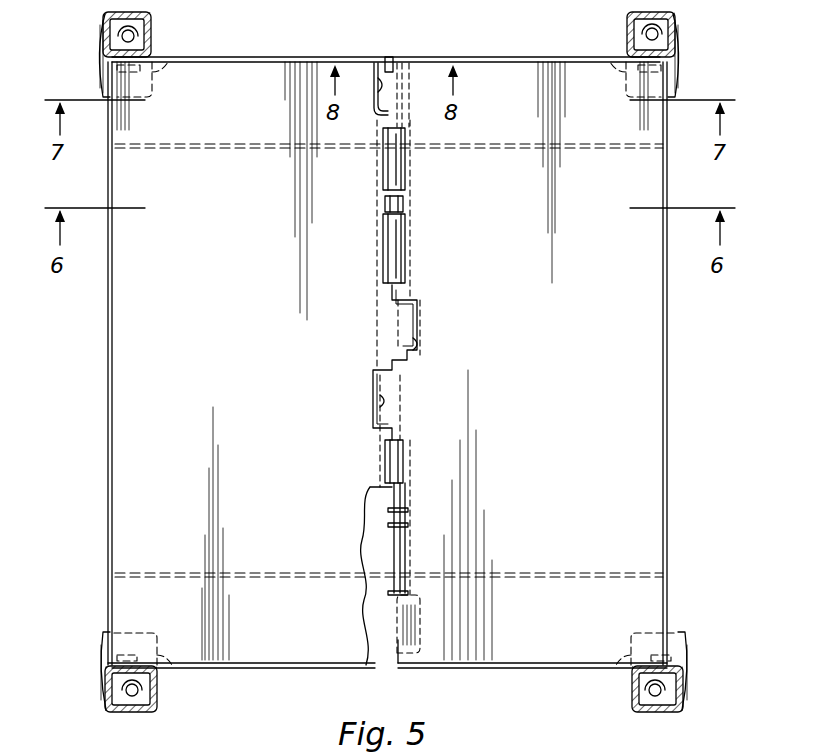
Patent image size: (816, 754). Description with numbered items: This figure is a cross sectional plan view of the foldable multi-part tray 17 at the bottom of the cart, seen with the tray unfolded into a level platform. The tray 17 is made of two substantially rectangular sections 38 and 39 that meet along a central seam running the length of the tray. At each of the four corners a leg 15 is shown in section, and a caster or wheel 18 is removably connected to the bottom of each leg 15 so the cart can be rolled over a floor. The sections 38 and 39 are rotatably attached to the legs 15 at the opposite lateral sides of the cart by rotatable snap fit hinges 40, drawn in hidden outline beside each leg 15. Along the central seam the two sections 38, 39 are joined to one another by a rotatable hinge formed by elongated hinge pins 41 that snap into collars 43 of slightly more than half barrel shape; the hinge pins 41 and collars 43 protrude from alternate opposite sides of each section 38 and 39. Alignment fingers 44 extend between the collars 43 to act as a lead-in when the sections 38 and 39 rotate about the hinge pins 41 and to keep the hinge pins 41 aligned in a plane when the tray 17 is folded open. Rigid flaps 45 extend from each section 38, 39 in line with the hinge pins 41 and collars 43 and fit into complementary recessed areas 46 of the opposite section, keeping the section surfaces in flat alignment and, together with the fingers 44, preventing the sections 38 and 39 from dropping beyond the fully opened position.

The legs 15 is at (106, 26).
The foldable multi-part tray 17 is at (517, 56).
The casters or wheels 18 is at (98, 52).
The tray section 38 is at (264, 311).
The tray section 39 is at (539, 311).
The rotatable snap fit hinges 40 is at (180, 62).
The hinge pins 41 is at (398, 170).
The collars 43 is at (404, 161).
The alignment fingers 44 is at (388, 56).
The rigid flaps 45 is at (408, 323).
The recessed areas 46 is at (410, 348).